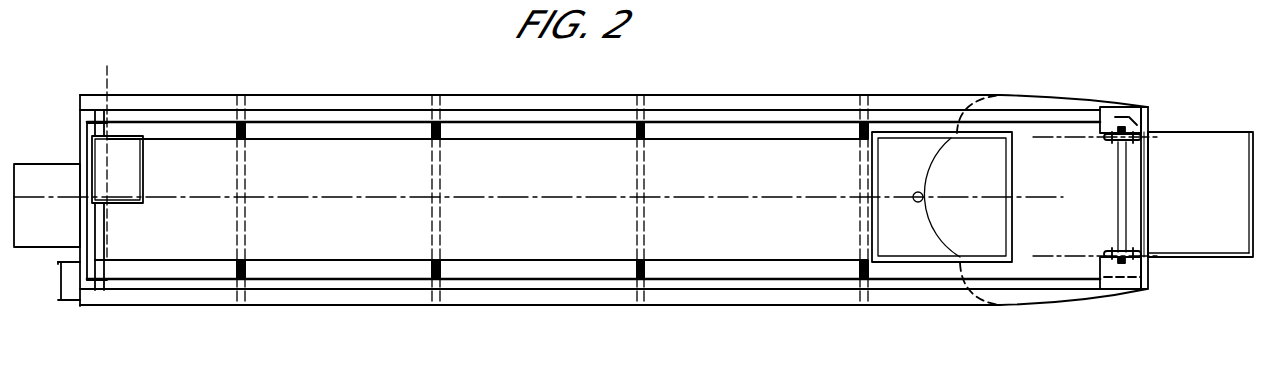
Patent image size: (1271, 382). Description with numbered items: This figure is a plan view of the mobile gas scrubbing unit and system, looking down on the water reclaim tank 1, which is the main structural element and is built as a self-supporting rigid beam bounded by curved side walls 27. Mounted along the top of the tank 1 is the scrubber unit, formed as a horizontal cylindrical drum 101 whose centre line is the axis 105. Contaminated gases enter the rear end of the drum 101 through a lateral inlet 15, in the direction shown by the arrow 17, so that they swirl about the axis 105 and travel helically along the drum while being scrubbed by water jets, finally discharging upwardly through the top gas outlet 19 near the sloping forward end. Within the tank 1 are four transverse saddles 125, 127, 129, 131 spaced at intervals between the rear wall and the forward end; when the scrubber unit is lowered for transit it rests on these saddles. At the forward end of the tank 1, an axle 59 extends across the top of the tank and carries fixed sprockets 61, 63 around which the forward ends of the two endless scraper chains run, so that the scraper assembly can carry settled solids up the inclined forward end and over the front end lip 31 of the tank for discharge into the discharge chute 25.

The water reclaim tank 1 is at (384, 296).
The lateral inlet 15 is at (117, 131).
The arrow 17 is at (117, 75).
The top gas outlet 19 is at (1010, 157).
The discharge chute 25 is at (1202, 157).
The side walls 27 is at (372, 78).
The front end lip 31 is at (1150, 185).
The axle 59 is at (1123, 178).
The sprocket 61 is at (1108, 137).
The sprocket 63 is at (1133, 258).
The drum 101 is at (710, 155).
The axis 105 is at (538, 196).
The transverse saddle 125 is at (243, 132).
The transverse saddle 127 is at (440, 125).
The transverse saddle 129 is at (643, 130).
The transverse saddle 131 is at (868, 128).